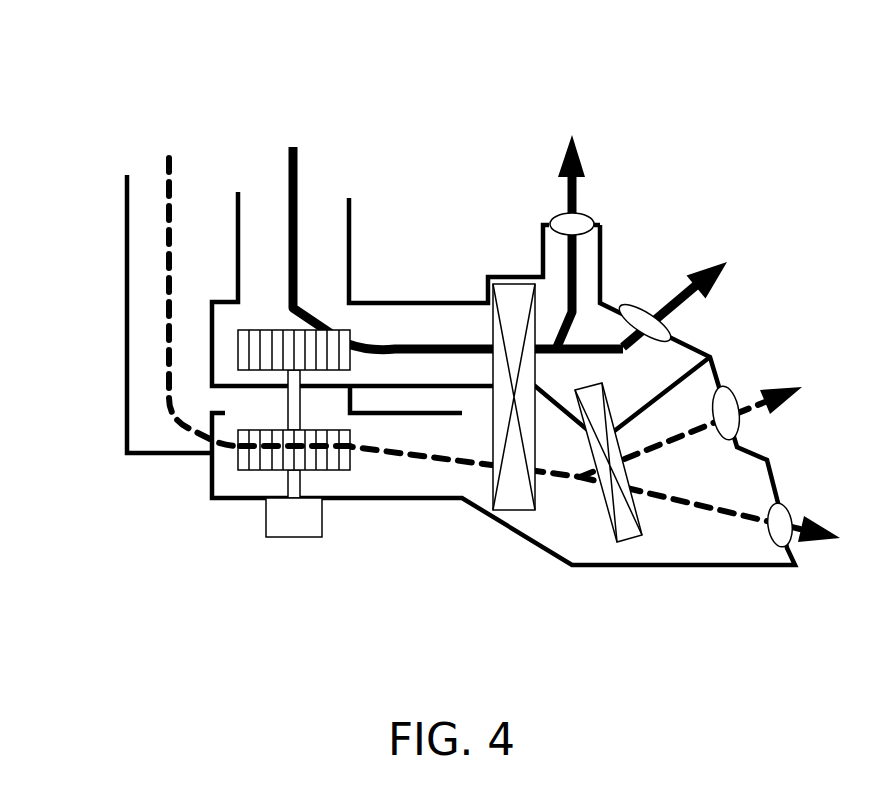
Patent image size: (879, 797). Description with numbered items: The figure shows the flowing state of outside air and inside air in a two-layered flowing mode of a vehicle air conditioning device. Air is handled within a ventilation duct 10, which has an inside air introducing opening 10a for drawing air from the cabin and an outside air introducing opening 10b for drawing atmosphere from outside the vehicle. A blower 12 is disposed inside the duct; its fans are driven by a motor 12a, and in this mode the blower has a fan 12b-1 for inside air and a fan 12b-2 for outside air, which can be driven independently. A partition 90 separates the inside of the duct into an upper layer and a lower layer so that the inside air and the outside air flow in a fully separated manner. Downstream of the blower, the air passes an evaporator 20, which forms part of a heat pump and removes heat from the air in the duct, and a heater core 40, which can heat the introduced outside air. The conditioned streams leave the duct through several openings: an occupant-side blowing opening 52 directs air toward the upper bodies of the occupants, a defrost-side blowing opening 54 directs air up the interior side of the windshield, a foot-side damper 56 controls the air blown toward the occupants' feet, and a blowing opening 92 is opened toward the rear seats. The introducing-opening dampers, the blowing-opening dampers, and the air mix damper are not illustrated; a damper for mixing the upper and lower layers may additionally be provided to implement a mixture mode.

The ventilation duct 10 is at (430, 303).
The inside air introducing opening 10a is at (153, 192).
The outside air introducing opening 10b is at (265, 193).
The blower 12 is at (199, 458).
The motor 12a is at (293, 525).
The fan for inside air 12b-1 is at (238, 360).
The fan for outside air 12b-2 is at (238, 462).
The evaporator 20 is at (517, 510).
The heater core 40 is at (628, 533).
The occupant-side blowing opening 52 is at (670, 322).
The defrost-side blowing opening 54 is at (582, 212).
The foot-side damper 56 is at (723, 387).
The partition 90 is at (375, 383).
The blowing opening 92 is at (787, 505).